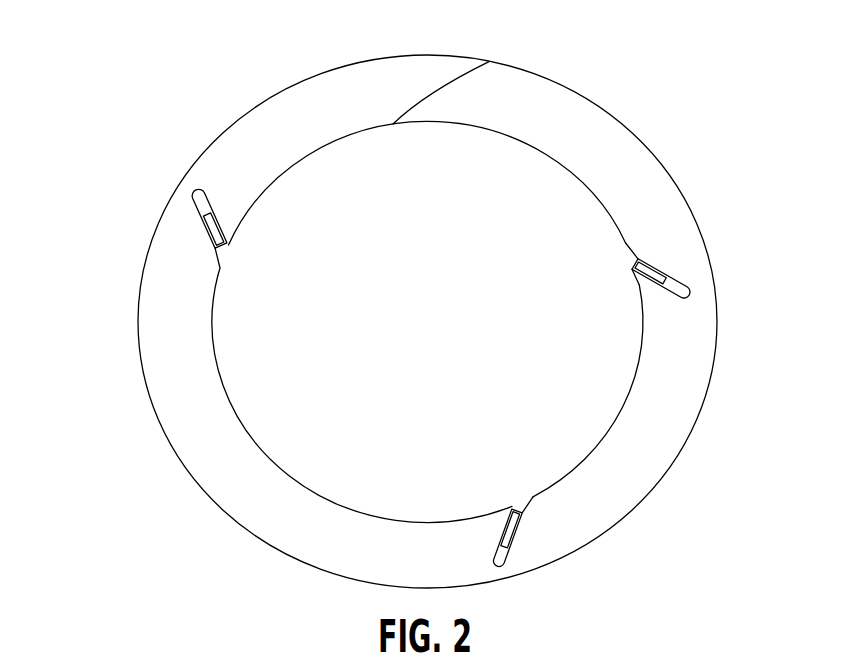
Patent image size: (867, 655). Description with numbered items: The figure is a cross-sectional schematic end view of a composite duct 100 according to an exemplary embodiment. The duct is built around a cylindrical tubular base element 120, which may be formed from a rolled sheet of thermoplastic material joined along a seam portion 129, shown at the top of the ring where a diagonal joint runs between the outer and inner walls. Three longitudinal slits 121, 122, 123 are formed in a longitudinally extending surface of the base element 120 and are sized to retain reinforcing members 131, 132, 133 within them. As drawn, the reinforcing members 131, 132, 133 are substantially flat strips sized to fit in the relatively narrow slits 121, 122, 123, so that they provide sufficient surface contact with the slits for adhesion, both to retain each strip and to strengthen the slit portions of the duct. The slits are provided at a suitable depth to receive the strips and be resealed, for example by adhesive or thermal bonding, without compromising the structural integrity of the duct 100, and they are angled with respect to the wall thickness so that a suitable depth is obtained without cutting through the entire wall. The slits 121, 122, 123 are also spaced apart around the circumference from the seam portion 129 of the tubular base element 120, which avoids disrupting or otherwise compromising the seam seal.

The composite duct 100 is at (415, 323).
The cylindrical tubular base element 120 is at (435, 323).
The longitudinal slit 121 is at (196, 213).
The longitudinal slit 122 is at (507, 553).
The longitudinal slit 123 is at (678, 276).
The seam portion 129 is at (503, 53).
The reinforcing member 131 is at (212, 232).
The reinforcing member 132 is at (517, 528).
The reinforcing member 133 is at (655, 276).